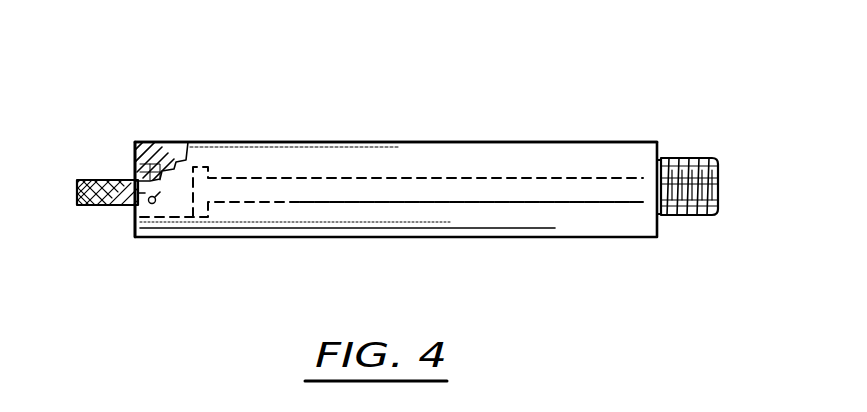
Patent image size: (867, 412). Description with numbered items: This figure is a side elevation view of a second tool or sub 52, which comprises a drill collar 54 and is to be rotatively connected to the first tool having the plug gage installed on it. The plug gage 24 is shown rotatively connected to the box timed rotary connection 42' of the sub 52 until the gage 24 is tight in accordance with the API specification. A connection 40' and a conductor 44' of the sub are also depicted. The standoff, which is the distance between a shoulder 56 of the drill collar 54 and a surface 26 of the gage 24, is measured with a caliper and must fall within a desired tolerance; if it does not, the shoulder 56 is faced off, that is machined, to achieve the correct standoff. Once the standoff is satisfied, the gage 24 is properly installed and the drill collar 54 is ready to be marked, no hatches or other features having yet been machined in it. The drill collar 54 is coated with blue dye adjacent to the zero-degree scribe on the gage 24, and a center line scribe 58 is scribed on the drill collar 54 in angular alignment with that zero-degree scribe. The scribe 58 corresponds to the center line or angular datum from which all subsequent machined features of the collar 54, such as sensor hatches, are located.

The plug gage 24 is at (77, 203).
The surface of gage 26 is at (135, 174).
The threaded connector 40' is at (714, 165).
The box timed rotary connection 42' is at (391, 222).
The conductor lead 44' is at (479, 236).
The second tool or sub 52 is at (538, 136).
The drill collar 54 is at (398, 151).
The shoulder 56 is at (135, 238).
The center line scribe 58 is at (135, 193).